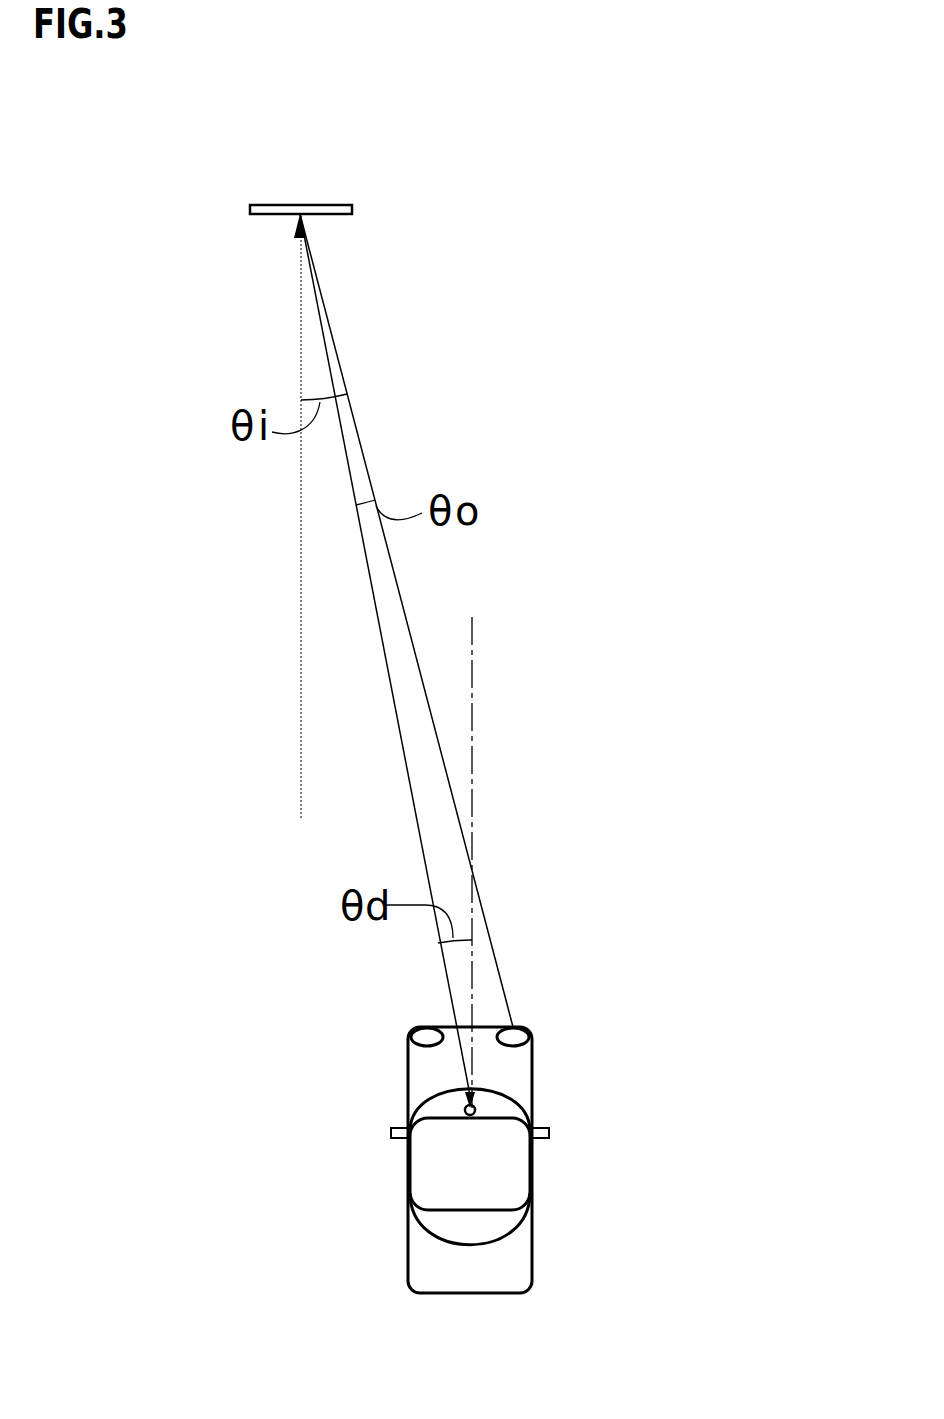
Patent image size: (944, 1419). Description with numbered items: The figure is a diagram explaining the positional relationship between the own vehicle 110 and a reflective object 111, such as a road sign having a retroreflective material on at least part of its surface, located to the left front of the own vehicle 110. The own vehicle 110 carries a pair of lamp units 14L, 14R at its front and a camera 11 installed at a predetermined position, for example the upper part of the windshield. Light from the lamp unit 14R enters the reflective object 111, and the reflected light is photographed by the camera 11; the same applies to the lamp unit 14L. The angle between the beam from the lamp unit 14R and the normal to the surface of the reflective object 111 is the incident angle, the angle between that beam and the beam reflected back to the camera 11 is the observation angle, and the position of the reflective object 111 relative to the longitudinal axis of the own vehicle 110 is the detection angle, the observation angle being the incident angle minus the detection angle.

The reflective object 111 is at (258, 205).
The own vehicle 110 is at (532, 1253).
The lamp unit 14L is at (420, 1028).
The lamp unit 14R is at (520, 1028).
The camera 11 is at (472, 1106).